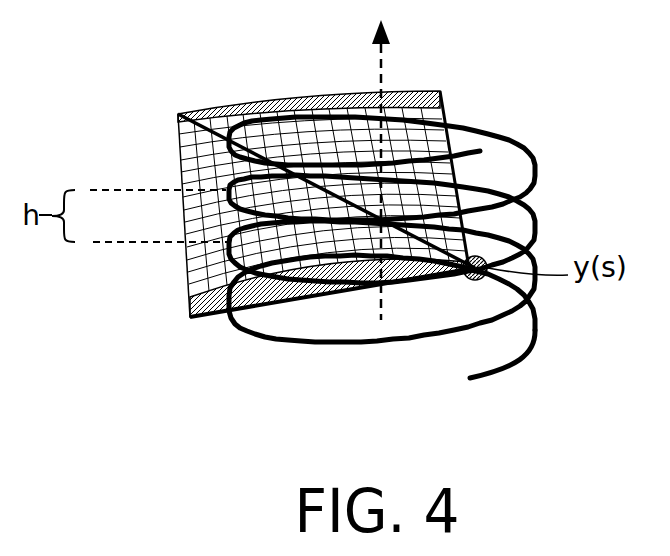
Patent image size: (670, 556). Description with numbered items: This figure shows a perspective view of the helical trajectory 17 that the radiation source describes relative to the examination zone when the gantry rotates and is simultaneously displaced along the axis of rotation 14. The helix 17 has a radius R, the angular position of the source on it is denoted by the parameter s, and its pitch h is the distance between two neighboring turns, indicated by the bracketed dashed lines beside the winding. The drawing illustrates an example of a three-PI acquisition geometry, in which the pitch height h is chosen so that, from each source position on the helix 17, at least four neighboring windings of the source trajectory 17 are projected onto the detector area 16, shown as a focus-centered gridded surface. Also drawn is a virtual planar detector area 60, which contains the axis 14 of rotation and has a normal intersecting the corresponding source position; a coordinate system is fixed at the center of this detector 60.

The axis of rotation 14 is at (382, 58).
The detector area 16 is at (412, 90).
The helical trajectory 17 is at (507, 368).
The virtual planar detector area 60 is at (490, 197).